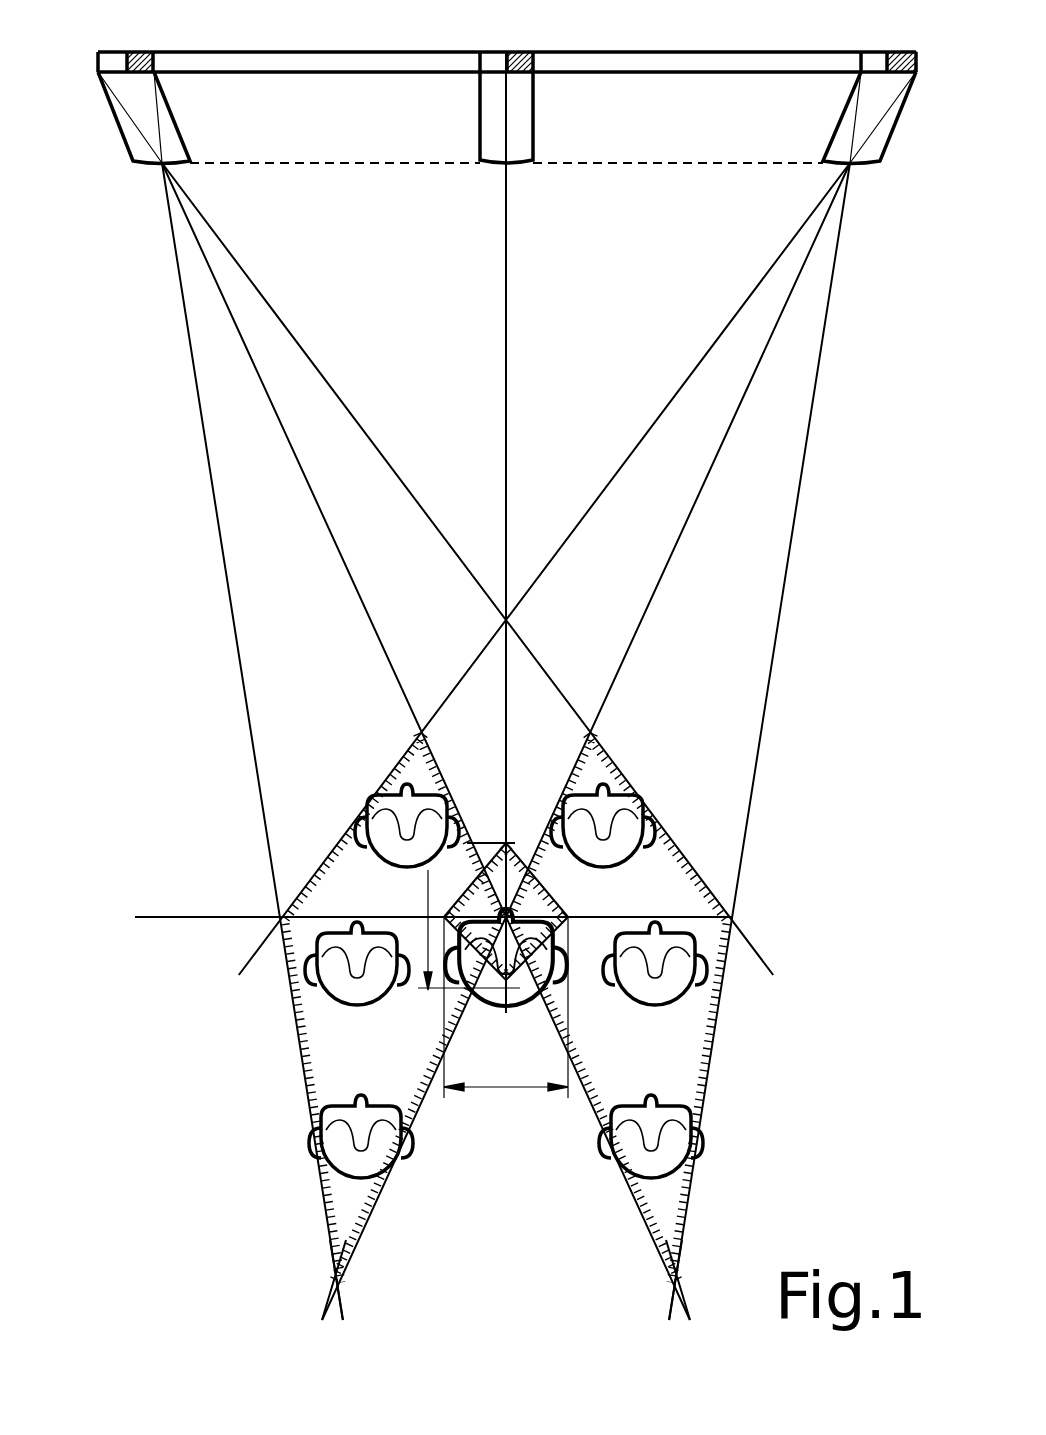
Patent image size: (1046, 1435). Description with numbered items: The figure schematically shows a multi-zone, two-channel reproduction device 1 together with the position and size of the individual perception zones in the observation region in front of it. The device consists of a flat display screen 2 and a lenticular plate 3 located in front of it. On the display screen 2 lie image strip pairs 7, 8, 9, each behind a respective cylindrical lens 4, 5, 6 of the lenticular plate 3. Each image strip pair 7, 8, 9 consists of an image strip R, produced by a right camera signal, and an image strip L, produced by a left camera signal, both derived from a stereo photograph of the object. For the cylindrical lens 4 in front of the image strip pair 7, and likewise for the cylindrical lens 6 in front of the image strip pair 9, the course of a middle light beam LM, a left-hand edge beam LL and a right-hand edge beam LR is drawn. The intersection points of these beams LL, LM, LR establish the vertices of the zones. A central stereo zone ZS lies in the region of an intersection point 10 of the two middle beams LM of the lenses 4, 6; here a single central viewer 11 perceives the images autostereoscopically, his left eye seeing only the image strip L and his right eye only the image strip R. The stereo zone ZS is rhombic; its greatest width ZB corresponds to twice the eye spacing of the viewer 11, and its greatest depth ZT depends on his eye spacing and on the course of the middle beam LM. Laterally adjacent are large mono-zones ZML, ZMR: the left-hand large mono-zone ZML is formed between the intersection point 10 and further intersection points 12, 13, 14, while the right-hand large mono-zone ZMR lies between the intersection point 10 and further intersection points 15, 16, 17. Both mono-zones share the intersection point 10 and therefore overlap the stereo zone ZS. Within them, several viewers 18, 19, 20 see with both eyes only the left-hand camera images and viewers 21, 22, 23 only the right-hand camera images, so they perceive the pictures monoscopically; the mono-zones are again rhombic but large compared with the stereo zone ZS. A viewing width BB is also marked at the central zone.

The two-channel reproduction device 1 is at (263, 72).
The flat display screen 2 is at (298, 58).
The lenticular plate 3 is at (363, 107).
The cylindrical lens 4 is at (148, 93).
The cylindrical lens 5 is at (523, 97).
The cylindrical lens 6 is at (865, 102).
The image strip pair 7 is at (129, 48).
The image strip pair 8 is at (508, 53).
The image strip pair 9 is at (888, 57).
The intersection point 10 is at (506, 917).
The central viewer 11 is at (560, 920).
The intersection point 12 is at (421, 733).
The intersection point 13 is at (412, 921).
The intersection point 14 is at (337, 1284).
The intersection point 15 is at (590, 733).
The intersection point 16 is at (732, 917).
The intersection point 17 is at (675, 1284).
The viewer 18 is at (407, 813).
The viewer 19 is at (357, 960).
The viewer 20 is at (358, 1130).
The viewer 21 is at (657, 813).
The viewer 22 is at (657, 950).
The viewer 23 is at (651, 1130).
The image strip R is at (870, 62).
The image strip L is at (915, 50).
The middle light beam LM is at (824, 219).
The left-hand edge light beam LL is at (784, 250).
The right-hand edge light beam LR is at (829, 295).
The greatest depth of central stereo zone ZT is at (500, 915).
The central stereo zone ZS is at (490, 953).
The left-hand large mono-zone ZML is at (318, 1005).
The right-hand large mono-zone ZMR is at (655, 1040).
The viewing width BB is at (600, 1024).
The greatest width of central stereo zone ZB is at (497, 1087).